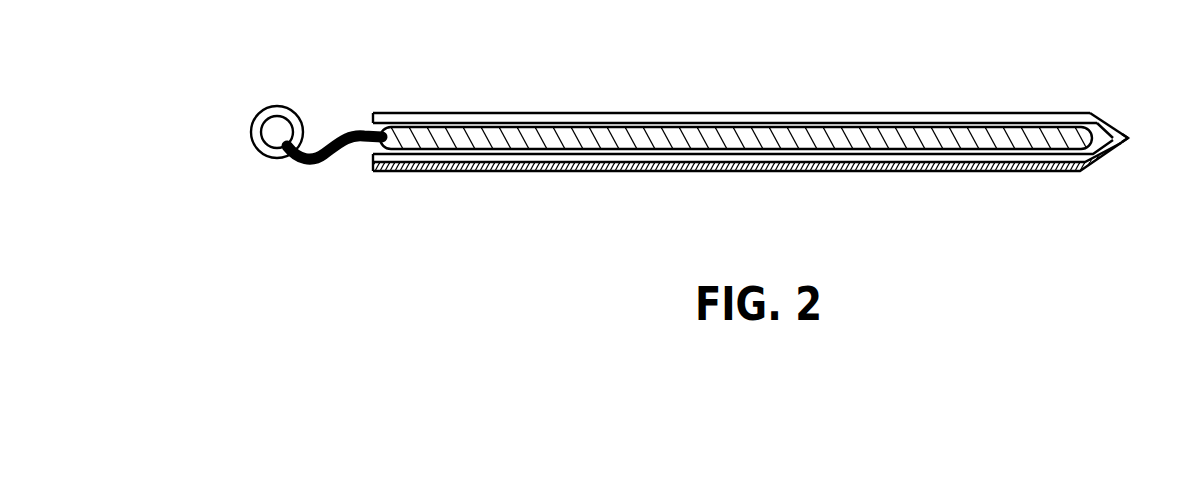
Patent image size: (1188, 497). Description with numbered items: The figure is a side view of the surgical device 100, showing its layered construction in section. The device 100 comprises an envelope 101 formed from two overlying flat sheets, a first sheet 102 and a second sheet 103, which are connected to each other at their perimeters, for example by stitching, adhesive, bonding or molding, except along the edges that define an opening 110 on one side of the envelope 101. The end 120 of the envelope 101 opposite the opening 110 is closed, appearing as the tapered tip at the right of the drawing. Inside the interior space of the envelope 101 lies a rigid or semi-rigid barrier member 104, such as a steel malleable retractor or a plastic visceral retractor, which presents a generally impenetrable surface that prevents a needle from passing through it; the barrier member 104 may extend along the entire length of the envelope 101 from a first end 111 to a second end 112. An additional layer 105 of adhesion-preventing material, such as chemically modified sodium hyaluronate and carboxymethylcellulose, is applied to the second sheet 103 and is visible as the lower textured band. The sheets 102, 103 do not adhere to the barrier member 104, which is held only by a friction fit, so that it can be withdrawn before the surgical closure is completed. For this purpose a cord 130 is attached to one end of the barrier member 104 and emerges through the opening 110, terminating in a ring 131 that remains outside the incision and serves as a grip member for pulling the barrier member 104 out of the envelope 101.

The surgical device 100 is at (492, 252).
The envelope 101 is at (968, 112).
The first sheet 102 is at (497, 116).
The second sheet 103 is at (1007, 157).
The barrier member 104 is at (793, 128).
The additional layer 105 is at (643, 172).
The opening 110 is at (376, 153).
The first end 111 is at (374, 114).
The second end 112 is at (1127, 143).
The end of envelope 120 is at (1108, 124).
The cord 130 is at (323, 138).
The ring 131 is at (262, 108).